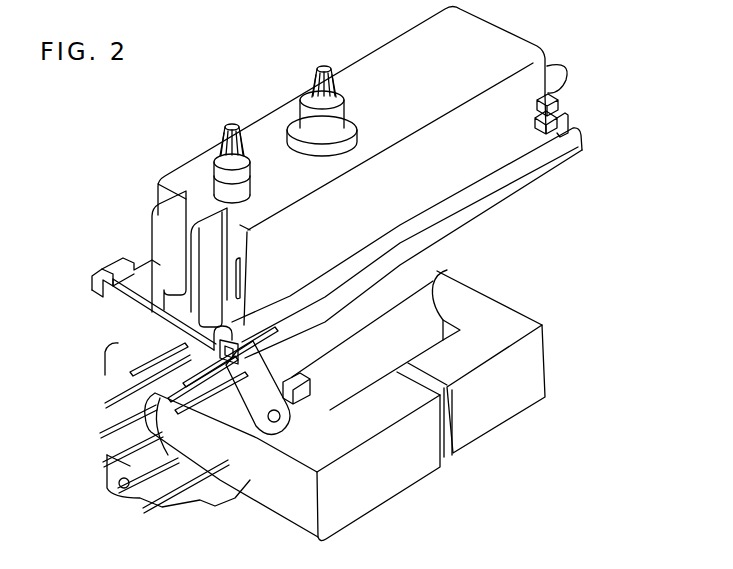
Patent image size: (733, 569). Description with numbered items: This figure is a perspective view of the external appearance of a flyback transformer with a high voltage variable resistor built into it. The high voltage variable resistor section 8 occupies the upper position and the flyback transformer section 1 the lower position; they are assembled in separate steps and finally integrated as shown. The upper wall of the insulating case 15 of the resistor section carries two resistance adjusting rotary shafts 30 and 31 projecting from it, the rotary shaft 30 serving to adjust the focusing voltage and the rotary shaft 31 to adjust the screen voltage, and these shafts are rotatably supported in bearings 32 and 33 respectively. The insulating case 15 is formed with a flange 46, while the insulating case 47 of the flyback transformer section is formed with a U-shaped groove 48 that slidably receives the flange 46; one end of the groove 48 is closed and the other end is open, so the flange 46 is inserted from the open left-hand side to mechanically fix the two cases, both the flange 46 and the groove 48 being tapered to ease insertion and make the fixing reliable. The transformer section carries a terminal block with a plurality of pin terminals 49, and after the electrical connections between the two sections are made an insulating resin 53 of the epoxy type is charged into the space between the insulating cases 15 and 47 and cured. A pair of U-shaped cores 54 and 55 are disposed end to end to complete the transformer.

The flyback transformer section 1 is at (560, 344).
The high voltage variable resistor section 8 is at (584, 120).
The insulating case 15 is at (531, 50).
The resistance adjusting rotary shaft 30 is at (325, 67).
The resistance adjusting rotary shaft 31 is at (228, 126).
The bearing 32 is at (305, 114).
The bearing 33 is at (218, 186).
The flange 46 is at (148, 275).
The insulating case 47 is at (453, 236).
The U-shaped groove 48 is at (118, 292).
The pin terminals 49 is at (103, 460).
The insulating resin 53 is at (152, 343).
The U-shaped core 54 is at (384, 494).
The U-shaped core 55 is at (493, 428).